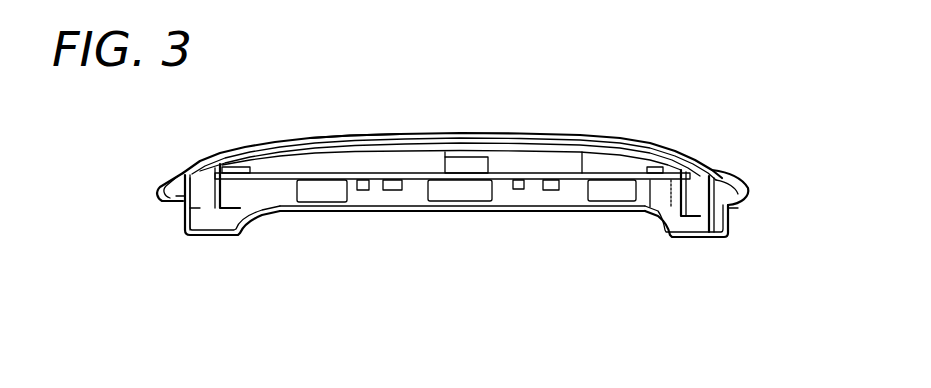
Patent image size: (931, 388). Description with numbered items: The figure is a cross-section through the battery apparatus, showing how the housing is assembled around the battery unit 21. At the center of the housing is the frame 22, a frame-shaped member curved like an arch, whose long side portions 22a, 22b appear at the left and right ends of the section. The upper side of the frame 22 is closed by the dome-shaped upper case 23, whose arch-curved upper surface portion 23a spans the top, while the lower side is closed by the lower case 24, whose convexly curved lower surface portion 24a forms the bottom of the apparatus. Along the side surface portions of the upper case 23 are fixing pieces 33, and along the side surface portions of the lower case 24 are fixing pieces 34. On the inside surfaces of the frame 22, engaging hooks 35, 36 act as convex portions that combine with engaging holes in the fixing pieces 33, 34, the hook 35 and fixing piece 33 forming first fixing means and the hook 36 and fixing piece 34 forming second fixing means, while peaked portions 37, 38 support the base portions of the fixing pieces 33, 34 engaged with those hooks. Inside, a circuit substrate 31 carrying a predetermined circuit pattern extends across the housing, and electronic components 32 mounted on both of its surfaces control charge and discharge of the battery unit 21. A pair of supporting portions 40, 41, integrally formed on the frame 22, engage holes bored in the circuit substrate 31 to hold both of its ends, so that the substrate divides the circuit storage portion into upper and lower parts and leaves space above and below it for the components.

The battery unit 21 is at (528, 152).
The frame 22 is at (170, 165).
The long side portion 22a is at (163, 182).
The long side portion 22b is at (735, 185).
The upper case 23 is at (452, 126).
The upper surface portion 23a is at (335, 135).
The lower case 24 is at (397, 222).
The lower surface portion 24a is at (550, 213).
The circuit substrate 31 is at (413, 172).
The electronic components 32 is at (360, 195).
The fixing piece 33 is at (210, 240).
The fixing piece 34 is at (699, 170).
The engaging hook 35 is at (172, 208).
The engaging hook 36 is at (740, 213).
The peaked portion 37 is at (190, 173).
The peaked portion 38 is at (700, 235).
The supporting portion 40 is at (242, 192).
The supporting portion 41 is at (663, 203).